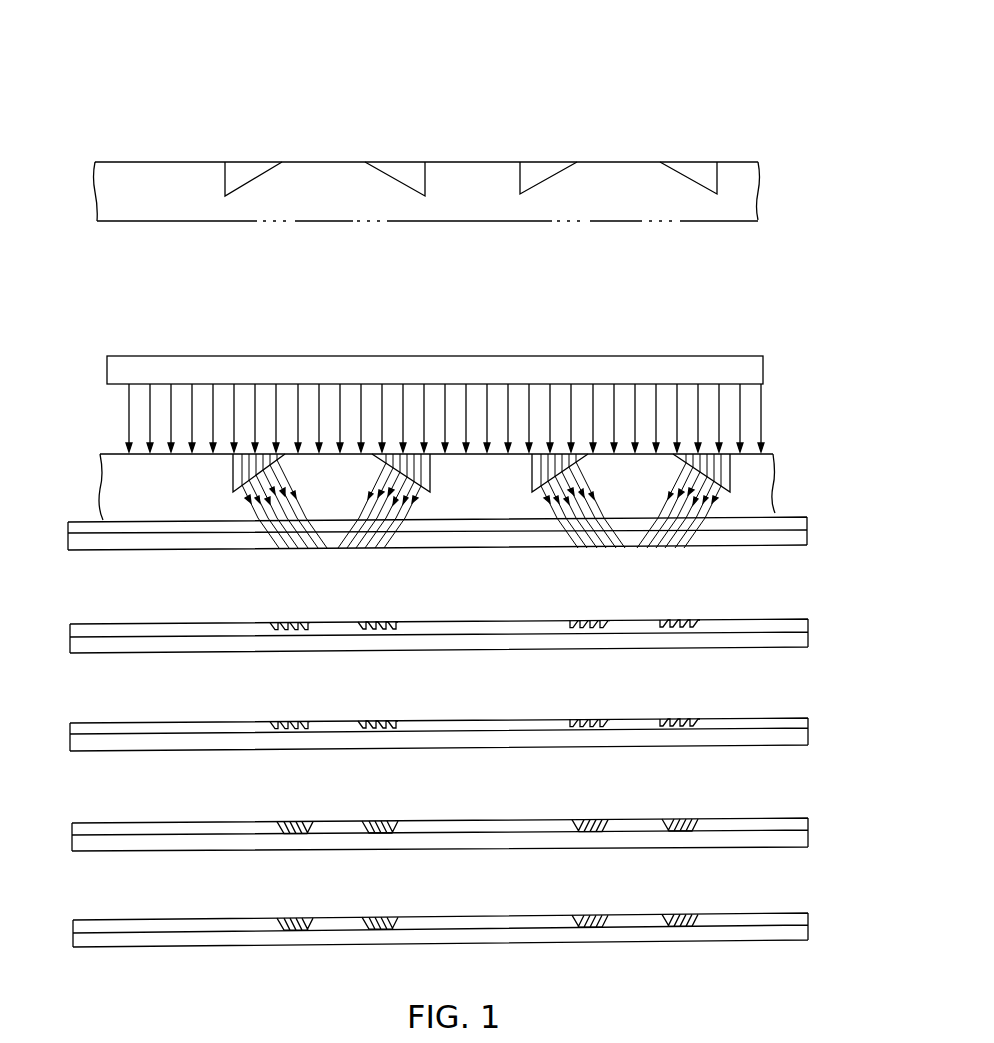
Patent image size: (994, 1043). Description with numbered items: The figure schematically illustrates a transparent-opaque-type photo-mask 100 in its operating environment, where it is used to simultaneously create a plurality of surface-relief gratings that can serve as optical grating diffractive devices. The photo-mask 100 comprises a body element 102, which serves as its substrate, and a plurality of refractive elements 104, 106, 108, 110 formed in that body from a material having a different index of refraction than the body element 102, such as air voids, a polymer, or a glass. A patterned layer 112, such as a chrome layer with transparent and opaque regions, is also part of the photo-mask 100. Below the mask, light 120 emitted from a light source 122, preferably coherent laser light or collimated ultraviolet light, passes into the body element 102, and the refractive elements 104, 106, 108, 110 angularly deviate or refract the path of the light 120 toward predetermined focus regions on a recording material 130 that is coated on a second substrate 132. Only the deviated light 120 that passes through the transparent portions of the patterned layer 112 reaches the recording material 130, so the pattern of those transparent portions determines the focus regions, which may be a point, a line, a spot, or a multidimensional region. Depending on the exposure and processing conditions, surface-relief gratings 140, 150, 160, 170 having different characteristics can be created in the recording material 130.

The photo-mask 100 is at (627, 100).
The body element 102 is at (410, 193).
The refractive element 104 is at (247, 160).
The refractive element 106 is at (405, 160).
The refractive element 108 is at (543, 158).
The refractive element 110 is at (693, 158).
The patterned layer 112 is at (213, 223).
The light 120 is at (789, 382).
The light source 122 is at (107, 378).
The recording material 130 is at (82, 522).
The second substrate 132 is at (807, 540).
The surface-relief grating 140 is at (62, 638).
The surface-relief grating 150 is at (62, 743).
The surface-relief grating 160 is at (67, 839).
The surface-relief grating 170 is at (67, 936).